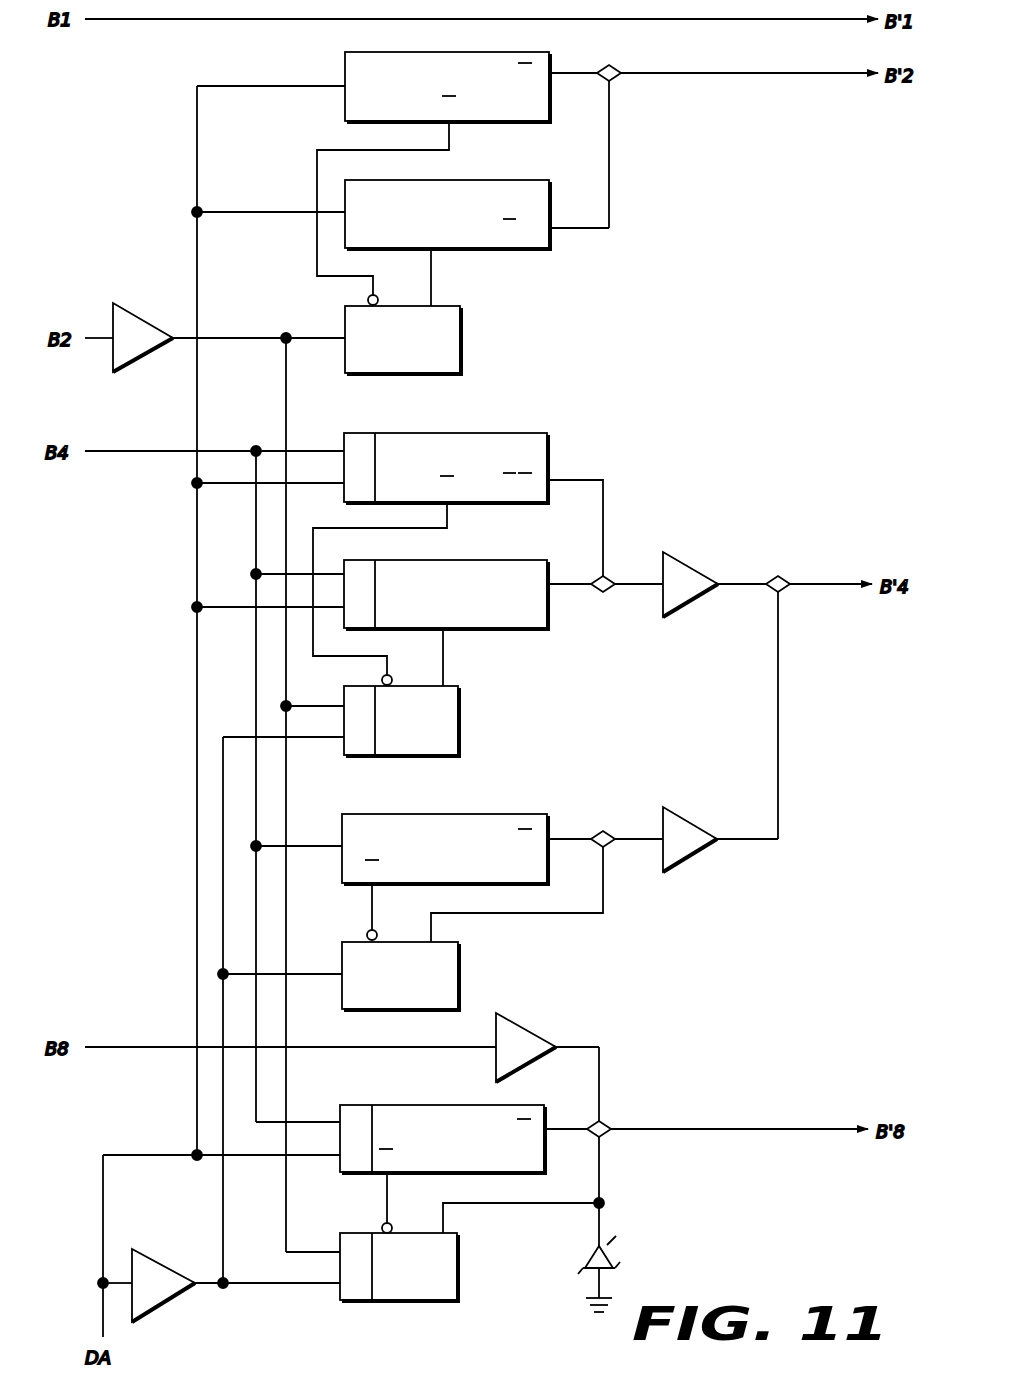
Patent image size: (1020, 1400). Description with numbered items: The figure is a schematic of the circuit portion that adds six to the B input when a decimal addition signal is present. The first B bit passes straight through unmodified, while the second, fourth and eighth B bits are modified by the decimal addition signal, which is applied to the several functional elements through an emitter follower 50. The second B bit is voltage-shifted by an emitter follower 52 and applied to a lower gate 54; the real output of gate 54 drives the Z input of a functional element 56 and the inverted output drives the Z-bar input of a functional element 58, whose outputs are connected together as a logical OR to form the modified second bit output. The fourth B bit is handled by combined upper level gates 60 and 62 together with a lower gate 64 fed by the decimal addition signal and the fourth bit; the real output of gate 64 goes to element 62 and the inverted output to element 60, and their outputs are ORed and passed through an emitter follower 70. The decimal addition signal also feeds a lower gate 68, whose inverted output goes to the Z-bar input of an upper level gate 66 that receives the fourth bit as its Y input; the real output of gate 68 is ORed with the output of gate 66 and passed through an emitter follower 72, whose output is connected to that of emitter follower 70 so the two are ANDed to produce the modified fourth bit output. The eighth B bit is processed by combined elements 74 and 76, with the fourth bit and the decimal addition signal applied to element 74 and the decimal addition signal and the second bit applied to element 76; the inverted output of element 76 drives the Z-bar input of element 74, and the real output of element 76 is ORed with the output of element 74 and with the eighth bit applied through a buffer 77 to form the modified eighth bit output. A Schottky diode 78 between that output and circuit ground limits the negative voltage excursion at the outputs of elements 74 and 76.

The emitter follower 50 is at (155, 1308).
The emitter follower 52 is at (145, 318).
The lower gate 54 is at (462, 306).
The functional element 56 is at (520, 180).
The functional element 58 is at (513, 52).
The upper level gate 60 is at (517, 433).
The upper level gate 62 is at (517, 560).
The lower gate 64 is at (463, 698).
The upper level gate 66 is at (517, 814).
The lower gate 68 is at (475, 935).
The emitter follower 70 is at (699, 566).
The emitter follower 72 is at (695, 822).
The element 74 is at (527, 1105).
The lower gate 76 is at (462, 1240).
The buffer 77 is at (533, 1032).
The Schottky diode 78 is at (617, 1263).